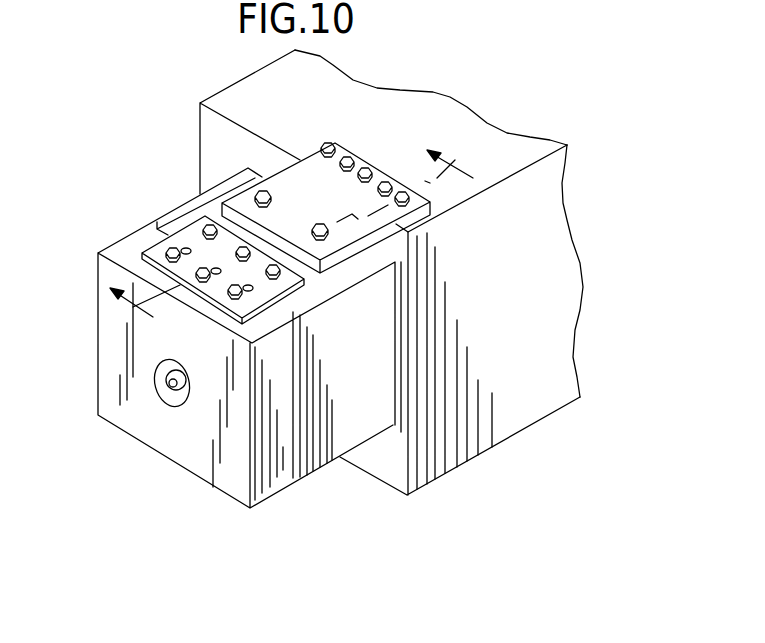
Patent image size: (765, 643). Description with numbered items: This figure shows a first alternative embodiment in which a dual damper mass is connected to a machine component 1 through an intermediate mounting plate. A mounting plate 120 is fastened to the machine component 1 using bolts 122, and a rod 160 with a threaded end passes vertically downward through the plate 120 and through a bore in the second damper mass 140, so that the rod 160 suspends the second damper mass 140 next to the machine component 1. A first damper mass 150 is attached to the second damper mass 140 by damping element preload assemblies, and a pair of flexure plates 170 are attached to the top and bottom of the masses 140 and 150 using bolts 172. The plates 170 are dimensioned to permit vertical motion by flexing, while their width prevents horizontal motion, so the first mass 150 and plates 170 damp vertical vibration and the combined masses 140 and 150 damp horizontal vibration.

The machine component 1 is at (543, 227).
The mounting plate 120 is at (299, 152).
The bolts 122 is at (328, 144).
The second damper mass 140 is at (216, 180).
The first damper mass 150 is at (115, 370).
The rod 160 is at (318, 226).
The flexure plates 170 is at (182, 218).
The bolts 172 is at (164, 247).